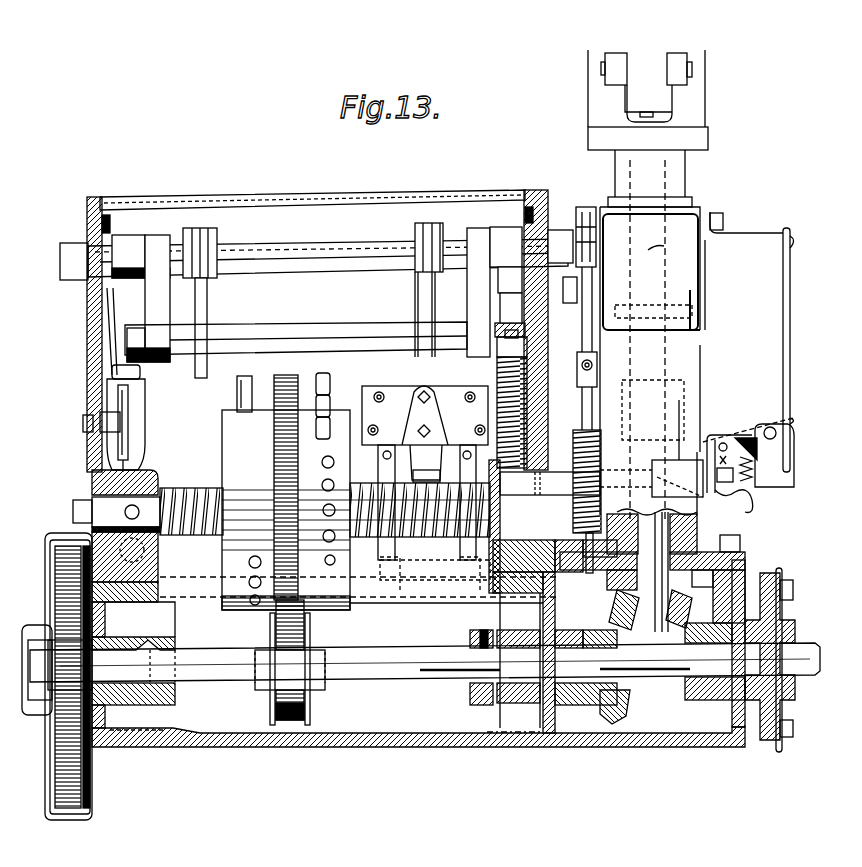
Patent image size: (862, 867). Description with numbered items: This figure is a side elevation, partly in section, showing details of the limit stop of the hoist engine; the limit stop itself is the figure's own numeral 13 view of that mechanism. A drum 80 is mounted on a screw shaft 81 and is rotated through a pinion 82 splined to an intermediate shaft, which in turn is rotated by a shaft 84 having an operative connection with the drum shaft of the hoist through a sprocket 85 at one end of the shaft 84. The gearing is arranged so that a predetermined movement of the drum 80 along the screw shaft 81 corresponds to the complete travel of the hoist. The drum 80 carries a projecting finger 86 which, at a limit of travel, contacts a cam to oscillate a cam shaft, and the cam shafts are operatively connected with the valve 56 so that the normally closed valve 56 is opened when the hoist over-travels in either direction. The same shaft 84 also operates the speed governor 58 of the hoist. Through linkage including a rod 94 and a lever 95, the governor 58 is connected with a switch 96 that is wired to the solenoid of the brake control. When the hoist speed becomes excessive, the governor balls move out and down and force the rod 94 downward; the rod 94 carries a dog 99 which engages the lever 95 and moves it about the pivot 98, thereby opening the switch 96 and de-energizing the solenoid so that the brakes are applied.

The frame casing 13 is at (178, 287).
The valve 56 is at (138, 398).
The speed governor 58 is at (698, 102).
The drum 80 is at (224, 441).
The screw shaft 81 is at (372, 488).
The pinion 82 is at (313, 707).
The shaft 84 is at (378, 654).
The sprocket 85 is at (778, 708).
The projecting finger 86 is at (244, 375).
The rod 94 is at (595, 390).
The lever 95 is at (564, 486).
The switch 96 is at (773, 305).
The pivot 98 is at (690, 492).
The dog 99 is at (528, 384).